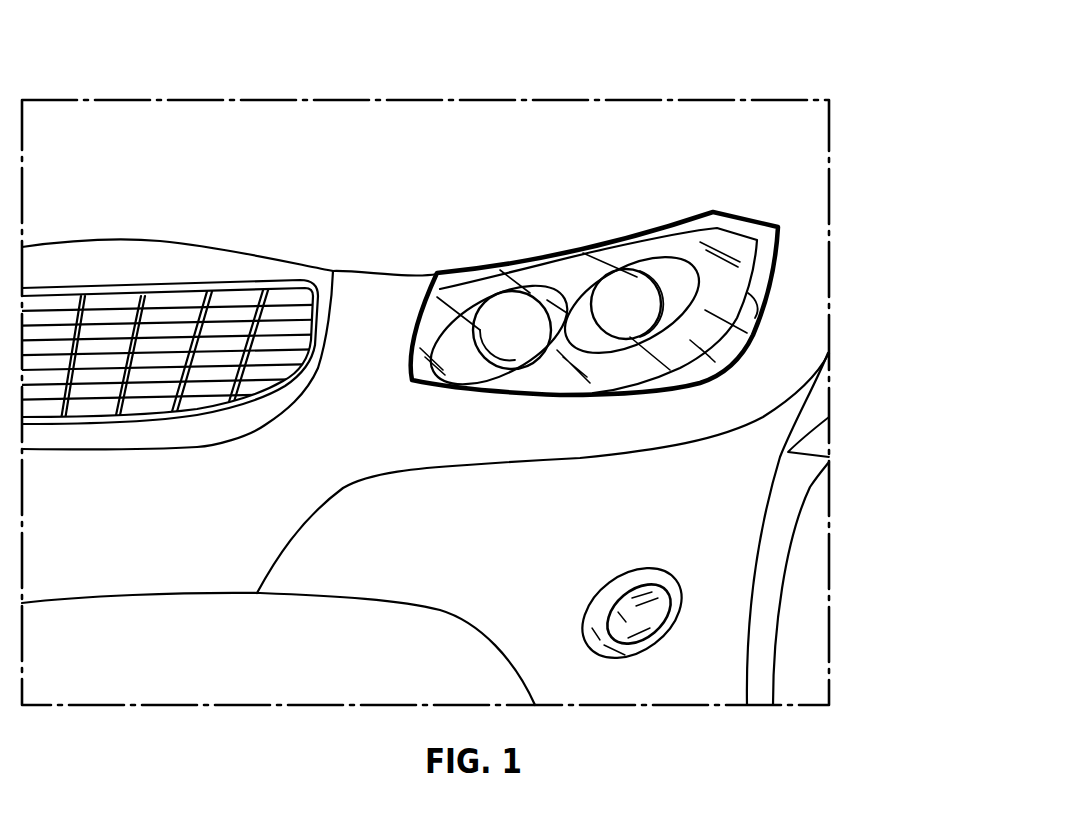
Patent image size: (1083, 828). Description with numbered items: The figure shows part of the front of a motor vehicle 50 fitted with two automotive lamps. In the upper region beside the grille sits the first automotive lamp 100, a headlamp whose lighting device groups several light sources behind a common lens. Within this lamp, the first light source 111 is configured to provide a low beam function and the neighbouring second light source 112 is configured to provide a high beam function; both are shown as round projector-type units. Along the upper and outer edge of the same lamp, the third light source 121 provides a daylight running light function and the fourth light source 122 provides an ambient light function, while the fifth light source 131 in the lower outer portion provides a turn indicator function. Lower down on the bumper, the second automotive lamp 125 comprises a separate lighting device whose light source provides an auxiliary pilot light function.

The motor vehicle 50 is at (130, 100).
The first automotive lamp 100 is at (460, 263).
The first light source 111 is at (519, 311).
The second light source 112 is at (620, 300).
The third light source 121 is at (699, 226).
The fourth light source 122 is at (762, 268).
The fifth light source 131 is at (720, 357).
The second automotive lamp 125 is at (635, 615).